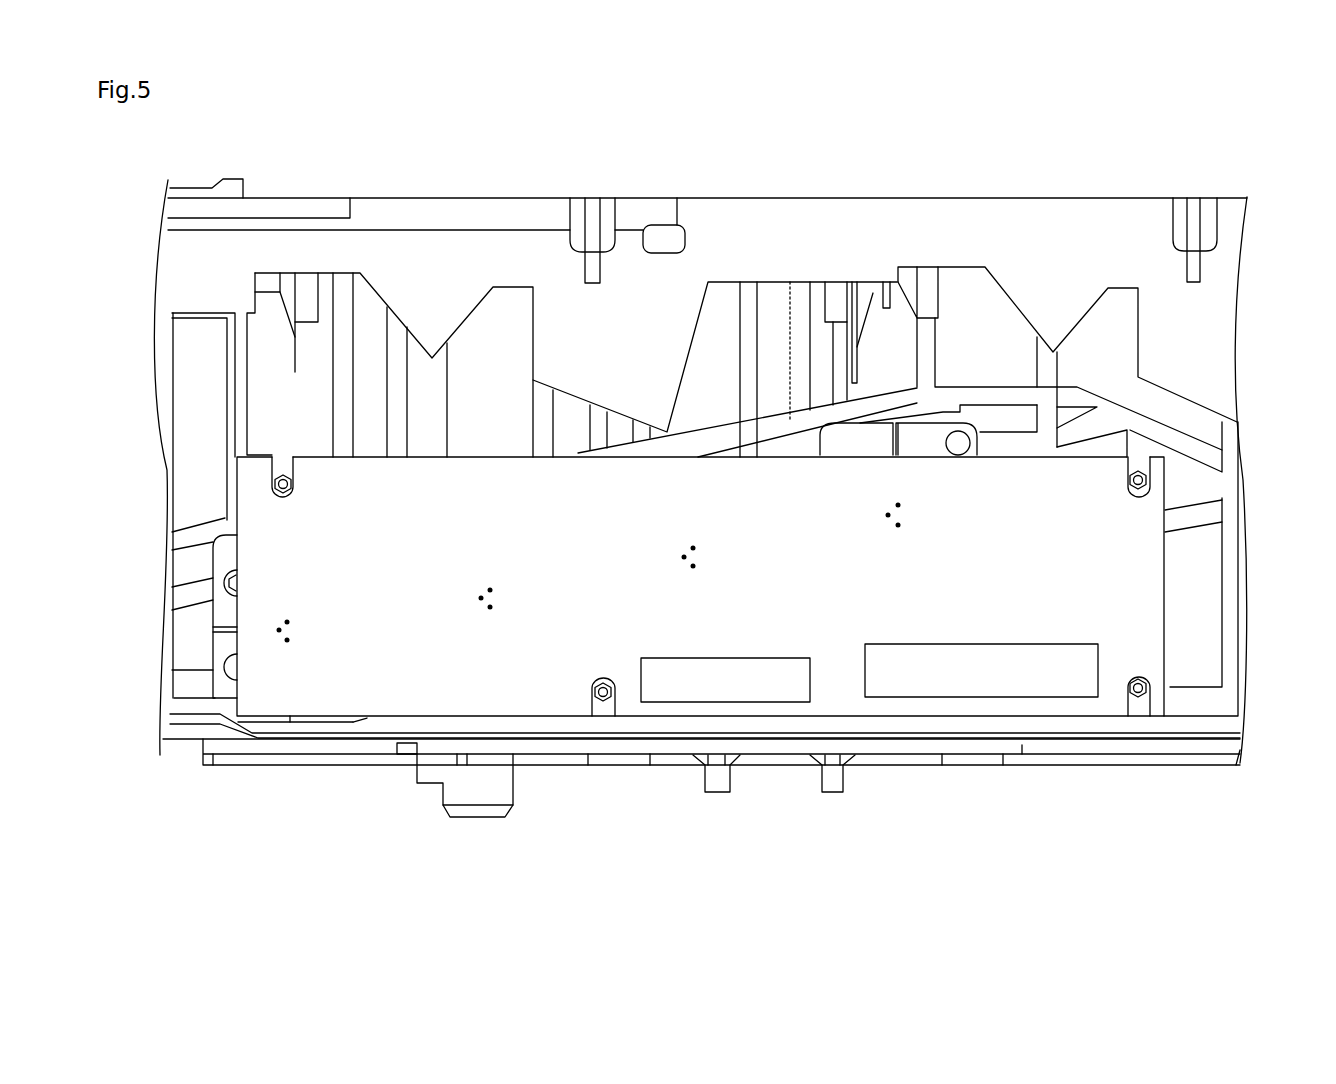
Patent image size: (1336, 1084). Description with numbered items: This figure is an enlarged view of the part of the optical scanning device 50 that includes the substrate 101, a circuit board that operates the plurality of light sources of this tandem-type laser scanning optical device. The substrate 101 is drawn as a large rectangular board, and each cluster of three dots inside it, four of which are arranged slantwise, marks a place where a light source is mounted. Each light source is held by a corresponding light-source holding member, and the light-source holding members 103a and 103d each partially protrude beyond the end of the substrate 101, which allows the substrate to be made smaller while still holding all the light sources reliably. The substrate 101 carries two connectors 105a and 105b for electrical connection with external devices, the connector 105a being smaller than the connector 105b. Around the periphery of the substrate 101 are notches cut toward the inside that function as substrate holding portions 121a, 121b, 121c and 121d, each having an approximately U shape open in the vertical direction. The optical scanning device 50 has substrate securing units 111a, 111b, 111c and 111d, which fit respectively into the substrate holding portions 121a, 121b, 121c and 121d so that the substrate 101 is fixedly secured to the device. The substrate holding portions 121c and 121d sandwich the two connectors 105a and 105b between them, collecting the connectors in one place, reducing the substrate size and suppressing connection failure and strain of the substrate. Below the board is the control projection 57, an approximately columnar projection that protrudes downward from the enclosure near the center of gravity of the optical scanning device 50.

The optical scanning device 50 is at (177, 138).
The substrate 101 is at (1118, 607).
The light-source holding member 103a is at (228, 697).
The light-source holding member 103d is at (875, 440).
The connector 105a is at (755, 685).
The connector 105b is at (983, 683).
The substrate securing unit 111a is at (283, 472).
The substrate securing unit 111b is at (1138, 470).
The substrate securing unit 111c is at (604, 705).
The substrate securing unit 111d is at (1137, 702).
The substrate holding portion 121a is at (273, 478).
The substrate holding portion 121b is at (1152, 476).
The substrate holding portion 121c is at (615, 705).
The substrate holding portion 121d is at (1152, 698).
The control projection 57 is at (480, 812).